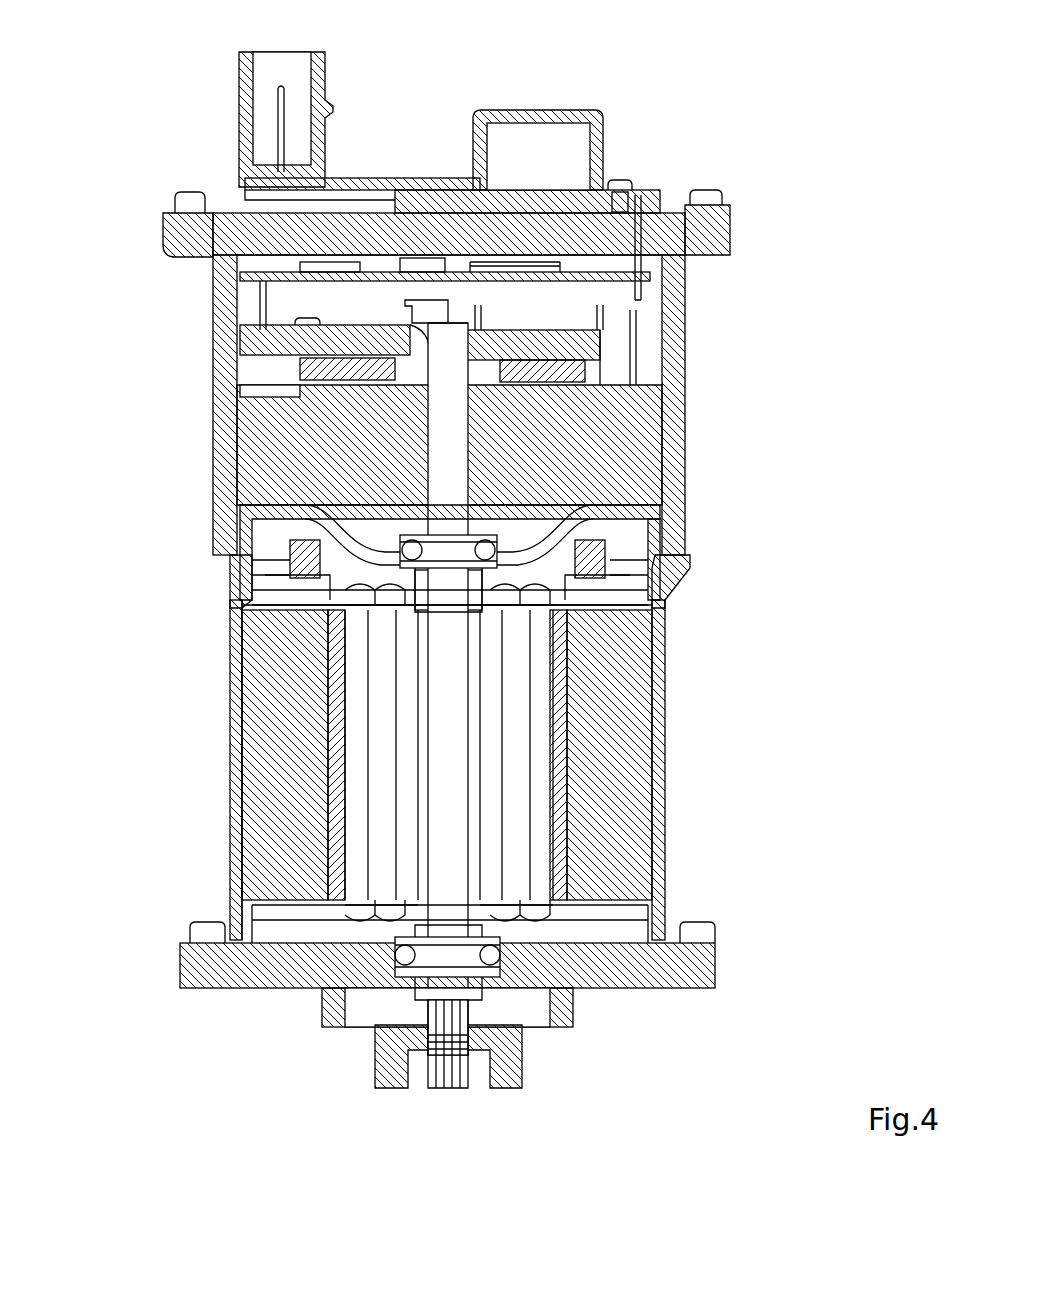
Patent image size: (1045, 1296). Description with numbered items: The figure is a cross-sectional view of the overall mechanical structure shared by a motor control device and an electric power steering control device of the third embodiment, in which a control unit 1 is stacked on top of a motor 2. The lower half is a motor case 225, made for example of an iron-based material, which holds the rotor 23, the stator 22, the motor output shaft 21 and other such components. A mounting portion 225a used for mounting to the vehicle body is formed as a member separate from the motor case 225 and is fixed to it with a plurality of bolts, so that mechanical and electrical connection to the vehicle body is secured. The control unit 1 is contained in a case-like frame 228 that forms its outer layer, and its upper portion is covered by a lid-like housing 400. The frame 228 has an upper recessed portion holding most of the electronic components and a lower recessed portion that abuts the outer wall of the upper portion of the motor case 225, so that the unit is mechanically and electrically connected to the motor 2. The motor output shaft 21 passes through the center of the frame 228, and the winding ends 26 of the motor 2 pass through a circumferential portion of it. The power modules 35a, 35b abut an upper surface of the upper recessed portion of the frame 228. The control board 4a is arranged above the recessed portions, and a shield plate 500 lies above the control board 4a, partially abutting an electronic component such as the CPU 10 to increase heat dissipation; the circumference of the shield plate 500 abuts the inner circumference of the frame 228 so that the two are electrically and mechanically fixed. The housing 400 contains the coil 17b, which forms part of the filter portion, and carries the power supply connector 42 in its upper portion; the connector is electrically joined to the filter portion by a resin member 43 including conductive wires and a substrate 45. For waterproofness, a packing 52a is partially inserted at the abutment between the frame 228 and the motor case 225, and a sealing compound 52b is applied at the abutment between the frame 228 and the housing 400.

The control unit 1 is at (700, 335).
The motor 2 is at (682, 842).
The control board 4a is at (688, 275).
The CPU 10 is at (320, 300).
The coil 17b is at (520, 112).
The motor output shaft 21 is at (372, 1045).
The stator 22 is at (240, 820).
The rotor 23 is at (365, 752).
The winding ends 26 is at (240, 492).
The power module 35a is at (298, 372).
The power module 35b is at (595, 370).
The power supply connector 42 is at (240, 97).
The resin member 43 is at (645, 212).
The substrate 45 is at (630, 190).
The packing 52a is at (670, 563).
The sealing compound 52b is at (180, 214).
The motor case 225 is at (667, 762).
The mounting portion 225a is at (707, 950).
The frame 228 is at (690, 478).
The housing 400 is at (588, 112).
The shield plate 500 is at (262, 279).